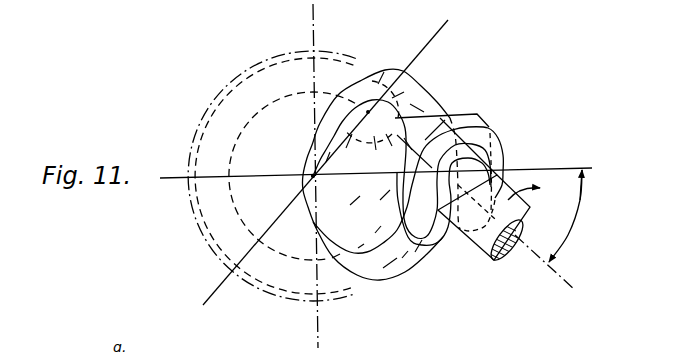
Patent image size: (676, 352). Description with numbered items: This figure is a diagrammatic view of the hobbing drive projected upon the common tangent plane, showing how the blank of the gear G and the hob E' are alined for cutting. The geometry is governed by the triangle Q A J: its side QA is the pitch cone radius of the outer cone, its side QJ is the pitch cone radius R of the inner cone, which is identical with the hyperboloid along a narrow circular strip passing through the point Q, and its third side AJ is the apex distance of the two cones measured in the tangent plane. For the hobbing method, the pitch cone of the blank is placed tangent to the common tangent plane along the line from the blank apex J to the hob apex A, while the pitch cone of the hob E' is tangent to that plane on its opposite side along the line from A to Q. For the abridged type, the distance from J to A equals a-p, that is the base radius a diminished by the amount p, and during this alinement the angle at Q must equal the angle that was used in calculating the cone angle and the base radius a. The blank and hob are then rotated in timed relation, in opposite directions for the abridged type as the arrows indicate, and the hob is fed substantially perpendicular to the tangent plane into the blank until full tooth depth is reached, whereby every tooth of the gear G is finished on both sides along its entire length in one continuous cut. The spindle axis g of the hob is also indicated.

The pitch cone apex of the hob A is at (325, 162).
The pitch cone apex of the blank J is at (316, 178).
The pitch cone radius of the inner cone R is at (313, 176).
The base radius a is at (313, 176).
The distance JA a-p is at (313, 176).
The pitch cone radius of the outer cone p is at (368, 112).
The gear G is at (398, 280).
The hob E' is at (423, 188).
The point of tangency Q is at (489, 127).
The cutter spindle axis g is at (577, 307).